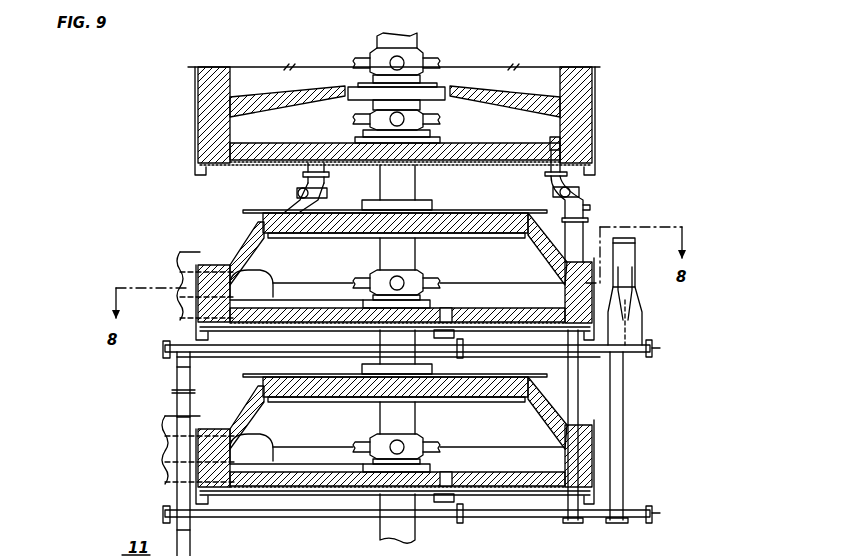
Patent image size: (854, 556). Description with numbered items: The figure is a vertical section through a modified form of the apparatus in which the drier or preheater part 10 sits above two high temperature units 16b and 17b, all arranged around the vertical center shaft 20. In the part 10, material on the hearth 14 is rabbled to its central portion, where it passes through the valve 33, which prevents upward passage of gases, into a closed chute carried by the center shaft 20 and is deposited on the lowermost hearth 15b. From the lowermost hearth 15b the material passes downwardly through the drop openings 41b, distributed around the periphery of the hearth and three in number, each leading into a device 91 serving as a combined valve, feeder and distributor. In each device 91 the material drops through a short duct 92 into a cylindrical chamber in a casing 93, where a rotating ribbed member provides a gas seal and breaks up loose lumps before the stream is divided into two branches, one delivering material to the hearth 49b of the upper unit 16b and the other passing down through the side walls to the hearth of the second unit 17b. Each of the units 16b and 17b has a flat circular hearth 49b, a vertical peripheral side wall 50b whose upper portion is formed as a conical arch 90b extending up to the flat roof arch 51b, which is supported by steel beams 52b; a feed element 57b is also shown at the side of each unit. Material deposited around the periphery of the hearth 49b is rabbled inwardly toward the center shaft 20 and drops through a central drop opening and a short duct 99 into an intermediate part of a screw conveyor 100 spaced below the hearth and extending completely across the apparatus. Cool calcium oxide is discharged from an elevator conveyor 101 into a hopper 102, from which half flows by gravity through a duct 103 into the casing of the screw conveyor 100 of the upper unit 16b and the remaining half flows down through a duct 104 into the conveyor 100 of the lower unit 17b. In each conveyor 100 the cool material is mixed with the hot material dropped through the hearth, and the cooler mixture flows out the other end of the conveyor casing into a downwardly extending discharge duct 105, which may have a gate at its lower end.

The part 10 is at (600, 80).
The hearth 14 is at (495, 75).
The lowermost hearth 15b is at (500, 141).
The center shaft 20 is at (418, 178).
The valve 33 is at (352, 80).
The drop openings 41b is at (565, 140).
The short duct 92 is at (303, 174).
The casing 93 is at (328, 190).
The devices 91 is at (296, 194).
The unit 16b is at (216, 247).
The second unit 17b is at (238, 395).
The steel beams 52b is at (465, 212).
The roof arch 51b is at (474, 237).
The conical arch 90b is at (255, 258).
The side wall 50b is at (275, 299).
The hearth 49b is at (476, 318).
The feed chute 57b is at (200, 263).
The short duct 99 is at (455, 335).
The screw conveyor 100 is at (468, 352).
The discharge duct 105 is at (180, 408).
The elevator conveyor 101 is at (630, 252).
The hopper 102 is at (625, 298).
The duct 103 is at (640, 328).
The duct 104 is at (622, 408).